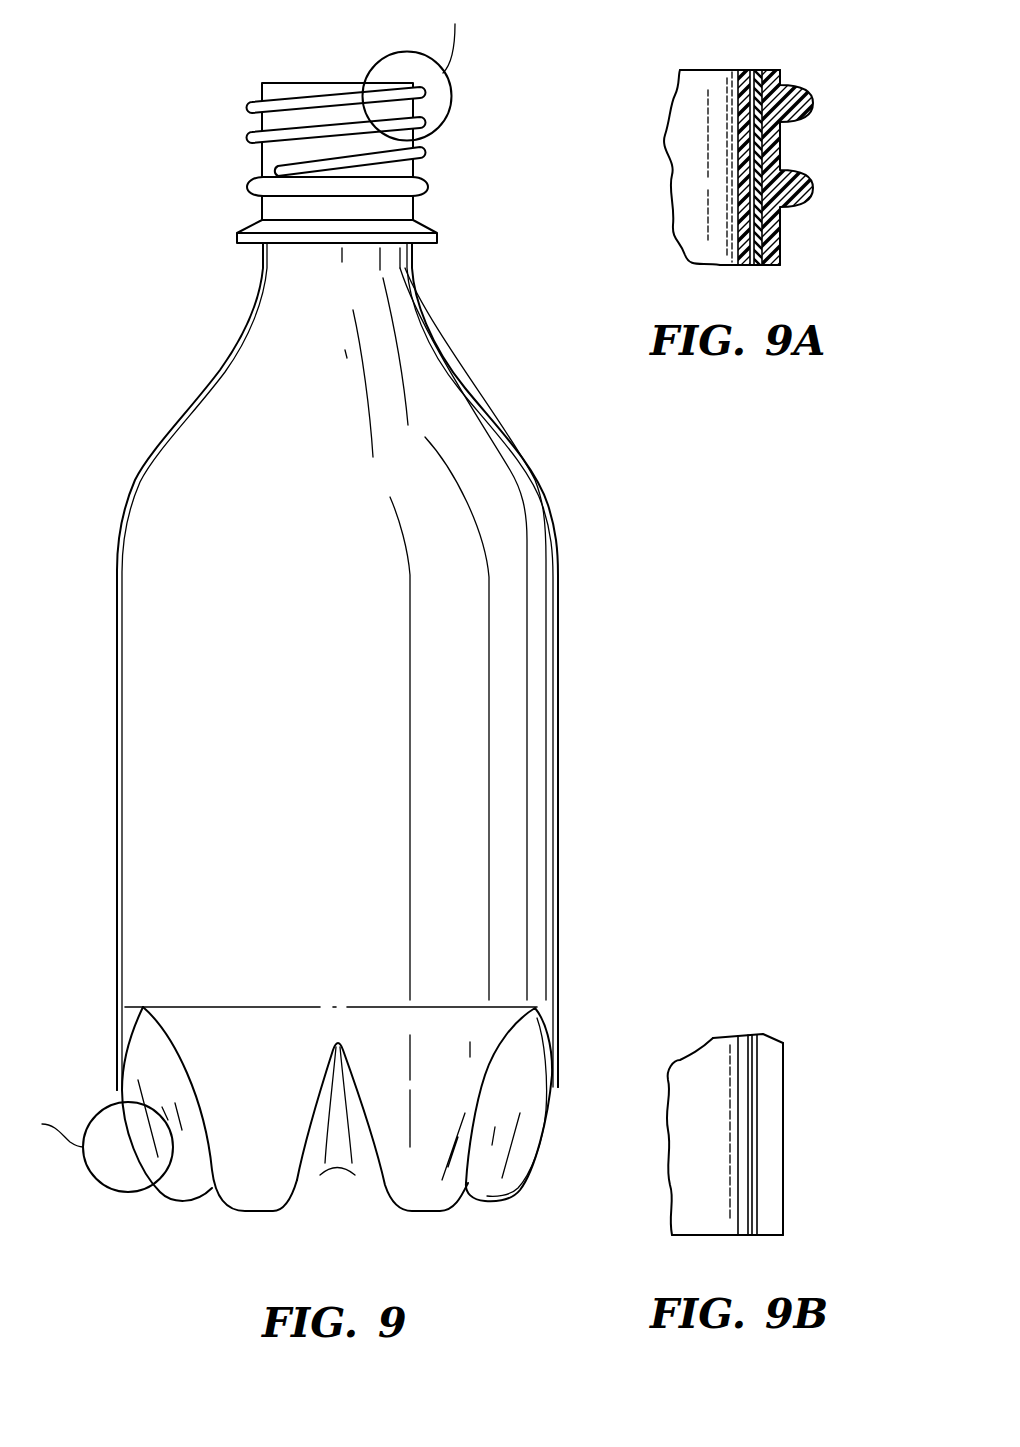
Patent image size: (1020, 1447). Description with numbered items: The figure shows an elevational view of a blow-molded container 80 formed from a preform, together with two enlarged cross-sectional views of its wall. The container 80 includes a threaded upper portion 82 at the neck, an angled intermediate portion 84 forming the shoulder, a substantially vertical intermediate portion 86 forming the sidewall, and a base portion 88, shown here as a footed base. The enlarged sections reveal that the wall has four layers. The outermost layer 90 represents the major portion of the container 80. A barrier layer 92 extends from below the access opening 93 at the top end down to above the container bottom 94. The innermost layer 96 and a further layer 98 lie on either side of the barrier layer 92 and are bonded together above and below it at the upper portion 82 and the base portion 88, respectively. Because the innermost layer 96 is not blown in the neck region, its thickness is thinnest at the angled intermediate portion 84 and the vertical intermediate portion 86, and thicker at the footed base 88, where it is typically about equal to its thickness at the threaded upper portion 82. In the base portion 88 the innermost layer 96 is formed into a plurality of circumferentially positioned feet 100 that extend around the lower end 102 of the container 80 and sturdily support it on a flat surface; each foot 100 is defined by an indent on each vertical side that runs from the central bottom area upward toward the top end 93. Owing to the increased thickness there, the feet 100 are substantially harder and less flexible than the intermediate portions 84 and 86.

In FIG. 9, the container 80 is at (344, 649).
In FIG. 9, the threaded upper portion 82 is at (252, 108).
In FIG. 9, the angled intermediate portion 84 is at (468, 370).
In FIG. 9, the substantially vertical intermediate portion 86 is at (557, 783).
In FIG. 9, the base portion 88 is at (553, 1088).
In FIG. 9A, the outermost layer 90 is at (777, 148).
In FIG. 9B, the outermost layer 90 is at (775, 1150).
In FIG. 9A, the barrier layer 92 is at (758, 262).
In FIG. 9B, the barrier layer 92 is at (740, 1153).
In FIG. 9, the access opening 93 is at (283, 82).
In FIG. 9, the container bottom 94 is at (448, 1213).
In FIG. 9A, the innermost layer 96 is at (745, 70).
In FIG. 9B, the innermost layer 96 is at (745, 1235).
In FIG. 9A, the layer 98 is at (757, 70).
In FIG. 9B, the layer 98 is at (757, 1235).
In FIG. 9, the feet 100 is at (272, 1188).
In FIG. 9, the lower end 102 is at (360, 1153).